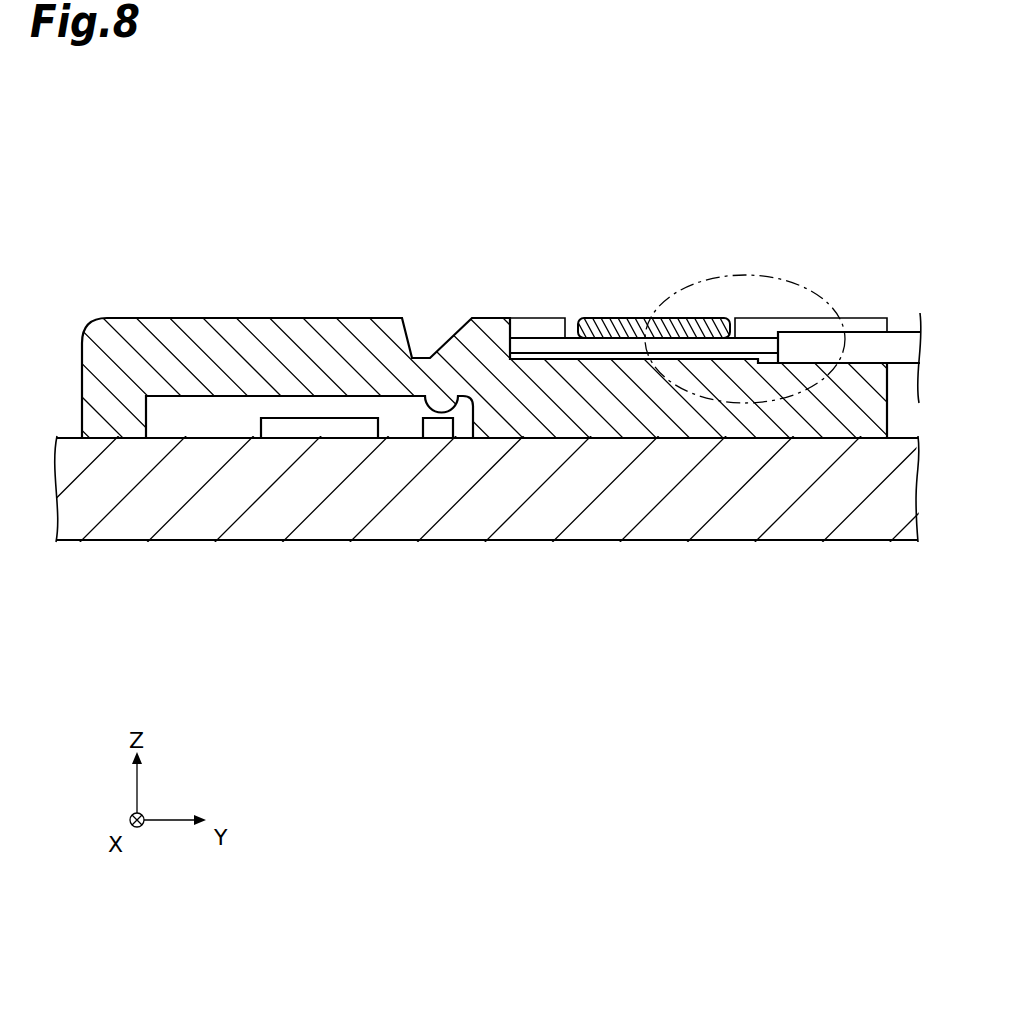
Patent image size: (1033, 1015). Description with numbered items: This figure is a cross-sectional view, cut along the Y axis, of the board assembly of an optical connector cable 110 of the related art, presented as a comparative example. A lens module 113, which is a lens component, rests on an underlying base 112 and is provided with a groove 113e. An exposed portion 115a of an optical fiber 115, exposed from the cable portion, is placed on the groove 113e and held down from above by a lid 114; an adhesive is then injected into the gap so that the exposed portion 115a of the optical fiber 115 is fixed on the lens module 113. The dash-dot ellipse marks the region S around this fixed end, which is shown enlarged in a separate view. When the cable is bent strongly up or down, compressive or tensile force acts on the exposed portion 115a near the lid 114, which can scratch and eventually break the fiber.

The optical connector cable 110 is at (522, 192).
The substrate 112 is at (658, 540).
The lens module 113 is at (290, 317).
The groove 113e is at (550, 353).
The lid 114 is at (617, 317).
The optical fiber 115 is at (644, 345).
The exposed portion 115a is at (812, 332).
The region S is at (740, 277).